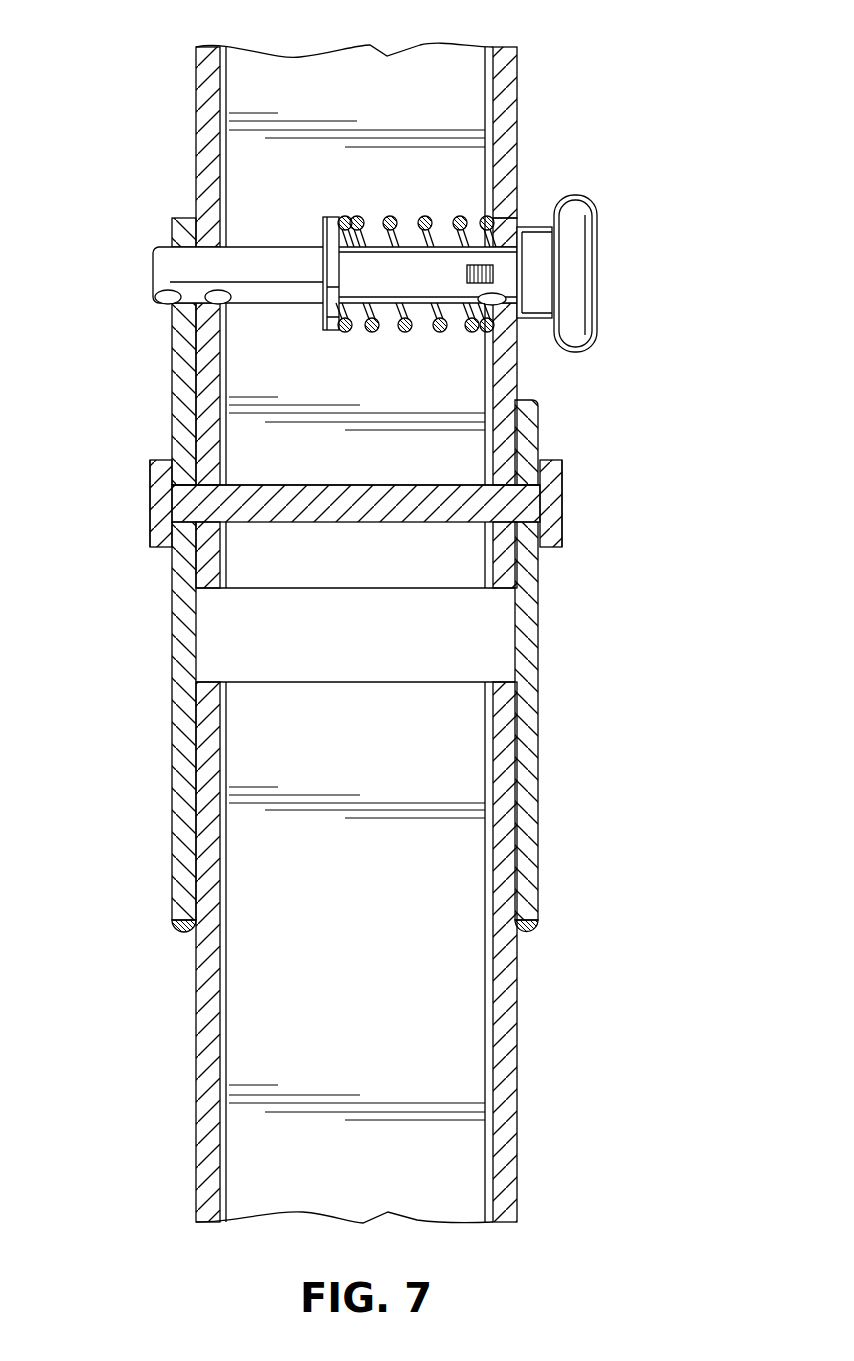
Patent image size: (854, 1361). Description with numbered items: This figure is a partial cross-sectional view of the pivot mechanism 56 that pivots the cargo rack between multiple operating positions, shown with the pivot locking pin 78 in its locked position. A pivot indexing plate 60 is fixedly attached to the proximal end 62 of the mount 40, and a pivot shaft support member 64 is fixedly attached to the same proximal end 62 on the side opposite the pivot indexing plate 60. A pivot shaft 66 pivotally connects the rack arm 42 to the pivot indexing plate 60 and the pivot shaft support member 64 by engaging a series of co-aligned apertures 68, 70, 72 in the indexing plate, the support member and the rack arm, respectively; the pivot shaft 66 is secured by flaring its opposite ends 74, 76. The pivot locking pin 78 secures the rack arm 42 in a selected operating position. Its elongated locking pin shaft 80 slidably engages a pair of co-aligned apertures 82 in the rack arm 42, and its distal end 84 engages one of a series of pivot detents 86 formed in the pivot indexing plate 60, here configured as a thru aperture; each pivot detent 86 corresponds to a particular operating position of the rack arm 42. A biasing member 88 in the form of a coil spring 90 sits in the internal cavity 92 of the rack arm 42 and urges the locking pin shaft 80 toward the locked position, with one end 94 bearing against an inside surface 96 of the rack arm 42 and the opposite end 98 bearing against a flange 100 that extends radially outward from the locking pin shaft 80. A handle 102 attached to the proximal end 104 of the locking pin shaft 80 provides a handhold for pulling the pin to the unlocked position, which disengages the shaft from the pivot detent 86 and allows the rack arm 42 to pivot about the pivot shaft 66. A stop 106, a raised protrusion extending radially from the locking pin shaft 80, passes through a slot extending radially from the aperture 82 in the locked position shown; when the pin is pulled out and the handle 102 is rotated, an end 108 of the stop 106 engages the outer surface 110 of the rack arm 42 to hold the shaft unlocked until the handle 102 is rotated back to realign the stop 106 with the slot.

The mount 40 is at (517, 1062).
The rack arm 42 is at (414, 128).
The pivot mechanism 56 is at (680, 387).
The pivot indexing plate 60 is at (173, 808).
The proximal end 62 is at (343, 682).
The pivot shaft support member 64 is at (538, 815).
The pivot shaft 66 is at (150, 518).
The aperture 68 is at (215, 487).
The aperture 70 is at (548, 485).
The aperture 72 is at (212, 514).
The end 74 is at (150, 485).
The end 76 is at (562, 505).
The pivot locking pin 78 is at (607, 282).
The locking pin shaft 80 is at (262, 247).
The aperture 82 is at (222, 303).
The distal end 84 is at (153, 272).
The pivot detent 86 is at (157, 302).
The biasing member 88 is at (390, 215).
The coil spring 90 is at (370, 334).
The internal cavity 92 is at (255, 90).
The end 94 is at (486, 216).
The inside surface 96 is at (485, 110).
The end 98 is at (345, 215).
The flange 100 is at (345, 333).
The handle 102 is at (598, 322).
The proximal end 104 is at (507, 232).
The stop 106 is at (553, 248).
The end 108 is at (467, 275).
The outer surface 110 is at (517, 72).